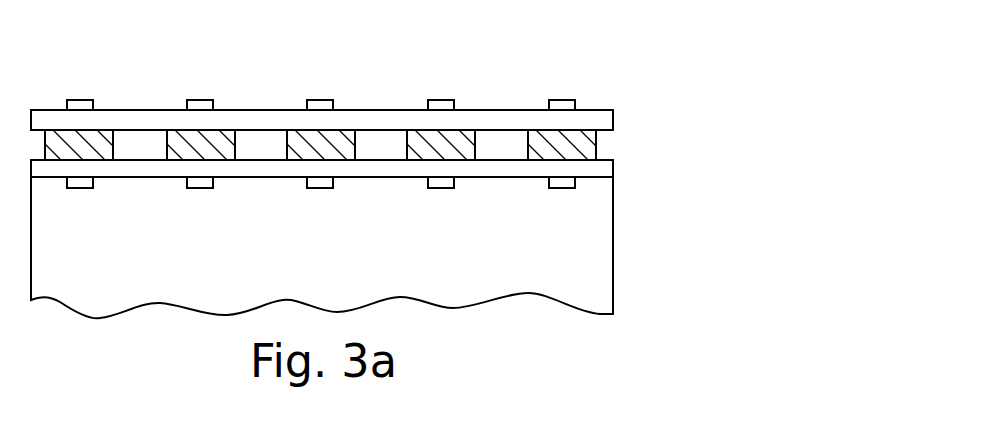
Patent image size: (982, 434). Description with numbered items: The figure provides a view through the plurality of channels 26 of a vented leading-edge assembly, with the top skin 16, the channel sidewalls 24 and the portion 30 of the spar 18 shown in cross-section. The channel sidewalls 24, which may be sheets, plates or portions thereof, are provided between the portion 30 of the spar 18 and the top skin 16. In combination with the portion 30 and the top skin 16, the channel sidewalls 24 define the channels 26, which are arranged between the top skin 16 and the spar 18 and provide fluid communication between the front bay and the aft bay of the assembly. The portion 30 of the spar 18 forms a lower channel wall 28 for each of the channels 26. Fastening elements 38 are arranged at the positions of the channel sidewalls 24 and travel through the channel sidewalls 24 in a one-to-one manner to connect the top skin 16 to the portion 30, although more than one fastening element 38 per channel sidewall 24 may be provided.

The top skin 16 is at (367, 120).
The spar 18 is at (602, 258).
The channel sidewalls 24 is at (478, 138).
The channels 26 is at (360, 140).
The lower channel wall 28 is at (258, 138).
The portion of the spar 30 is at (600, 170).
The fastening elements 38 is at (443, 100).